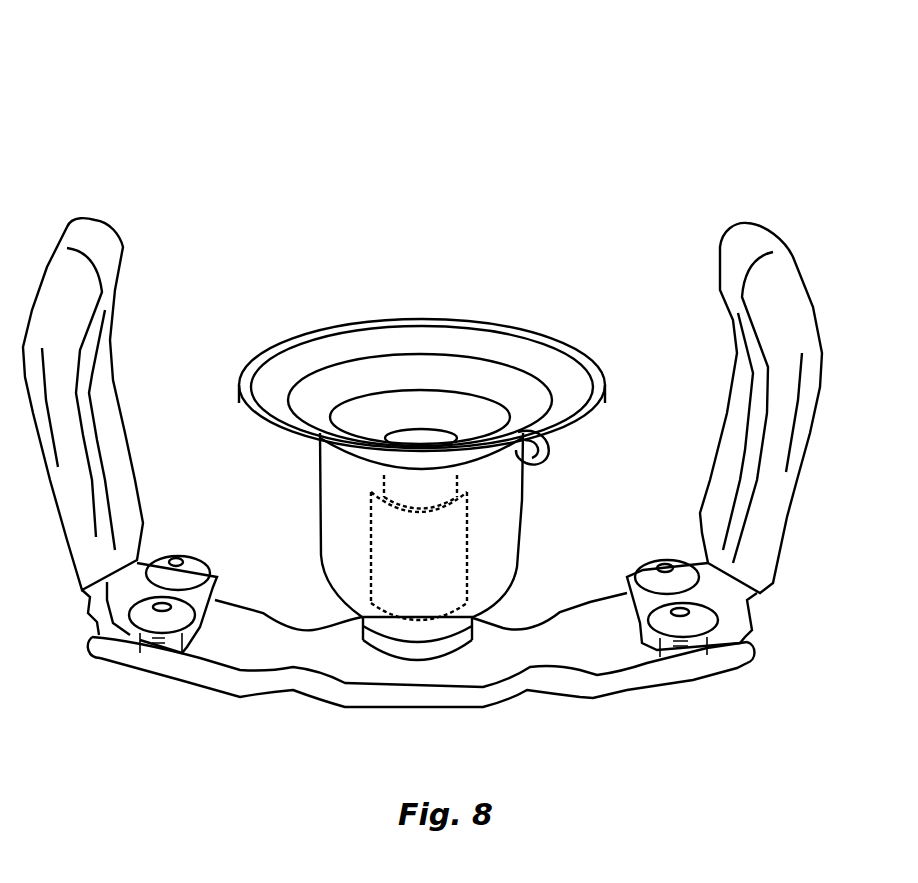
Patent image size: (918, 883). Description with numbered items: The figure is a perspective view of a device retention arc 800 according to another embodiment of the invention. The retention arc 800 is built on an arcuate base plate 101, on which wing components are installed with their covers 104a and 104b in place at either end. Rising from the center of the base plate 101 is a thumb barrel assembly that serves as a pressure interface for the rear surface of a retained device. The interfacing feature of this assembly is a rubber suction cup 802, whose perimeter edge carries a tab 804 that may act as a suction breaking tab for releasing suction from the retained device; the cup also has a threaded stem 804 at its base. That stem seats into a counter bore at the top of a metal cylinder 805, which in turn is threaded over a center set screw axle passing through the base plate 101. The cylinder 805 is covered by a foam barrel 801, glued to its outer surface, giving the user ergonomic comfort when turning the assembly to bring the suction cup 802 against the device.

The device retention arc 800 is at (423, 174).
The wing component cover 104a is at (107, 313).
The wing component cover 104b is at (723, 313).
The suction cup 802 is at (403, 318).
The foam barrel 801 is at (320, 545).
The tab / threaded stem 804 is at (543, 447).
The metal cylinder 805 is at (467, 555).
The arcuate base plate 101 is at (347, 707).